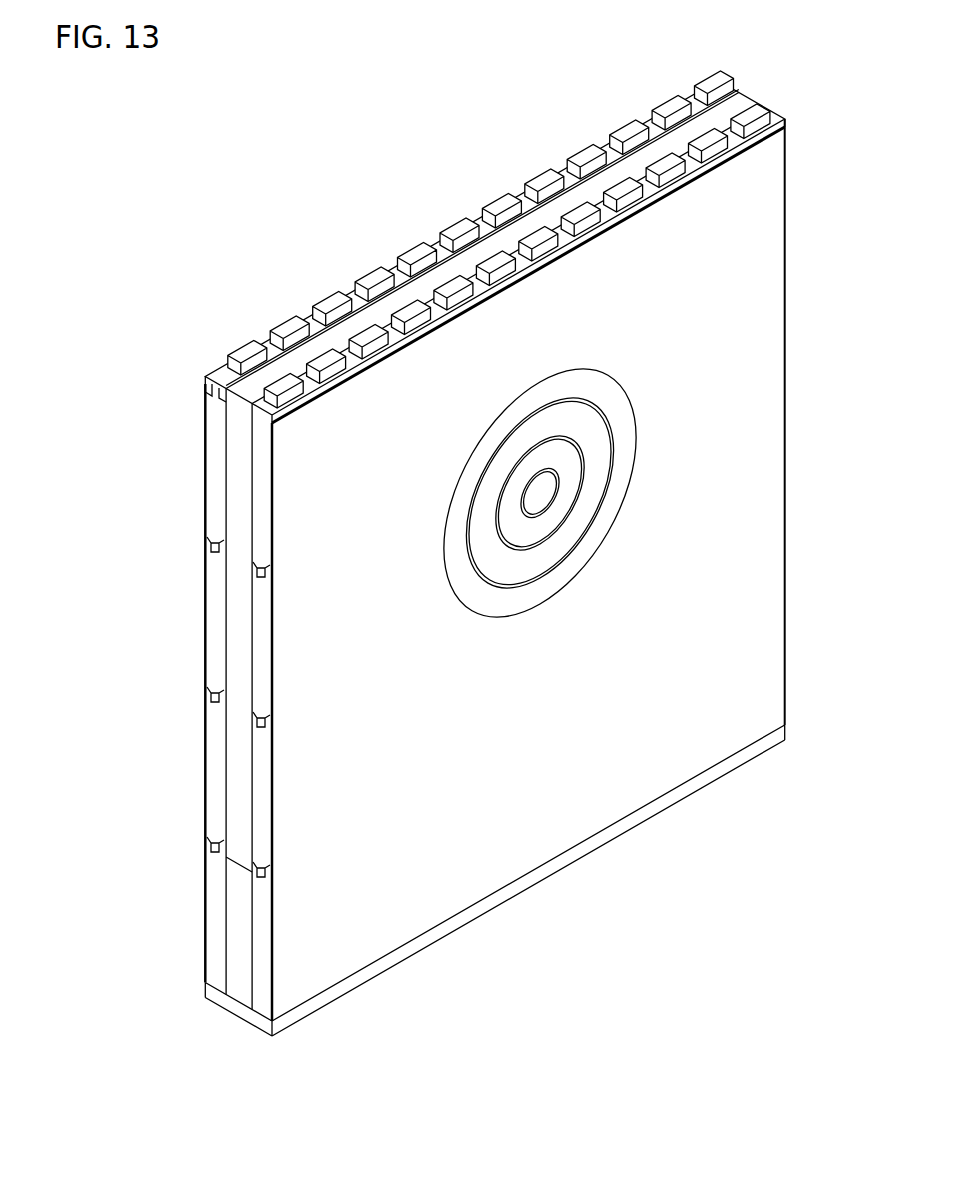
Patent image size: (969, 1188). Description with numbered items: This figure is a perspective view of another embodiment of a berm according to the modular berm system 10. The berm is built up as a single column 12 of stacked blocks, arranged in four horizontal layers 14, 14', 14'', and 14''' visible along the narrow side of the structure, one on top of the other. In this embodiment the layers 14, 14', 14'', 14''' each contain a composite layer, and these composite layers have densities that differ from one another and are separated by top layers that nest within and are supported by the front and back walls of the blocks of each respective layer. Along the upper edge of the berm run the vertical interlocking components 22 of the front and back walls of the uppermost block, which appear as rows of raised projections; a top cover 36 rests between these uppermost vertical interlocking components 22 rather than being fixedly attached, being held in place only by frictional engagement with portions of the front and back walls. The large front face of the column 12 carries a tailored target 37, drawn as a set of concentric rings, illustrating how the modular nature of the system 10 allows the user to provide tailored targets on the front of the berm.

The berm system 10 is at (274, 184).
The column 12 is at (528, 232).
The vertical interlocking component 22 is at (633, 139).
The top cover 36 is at (208, 381).
The layer 14 is at (202, 468).
The layer 14' is at (213, 615).
The layer 14'' is at (196, 763).
The layer 14''' is at (190, 929).
The target 37 is at (581, 563).